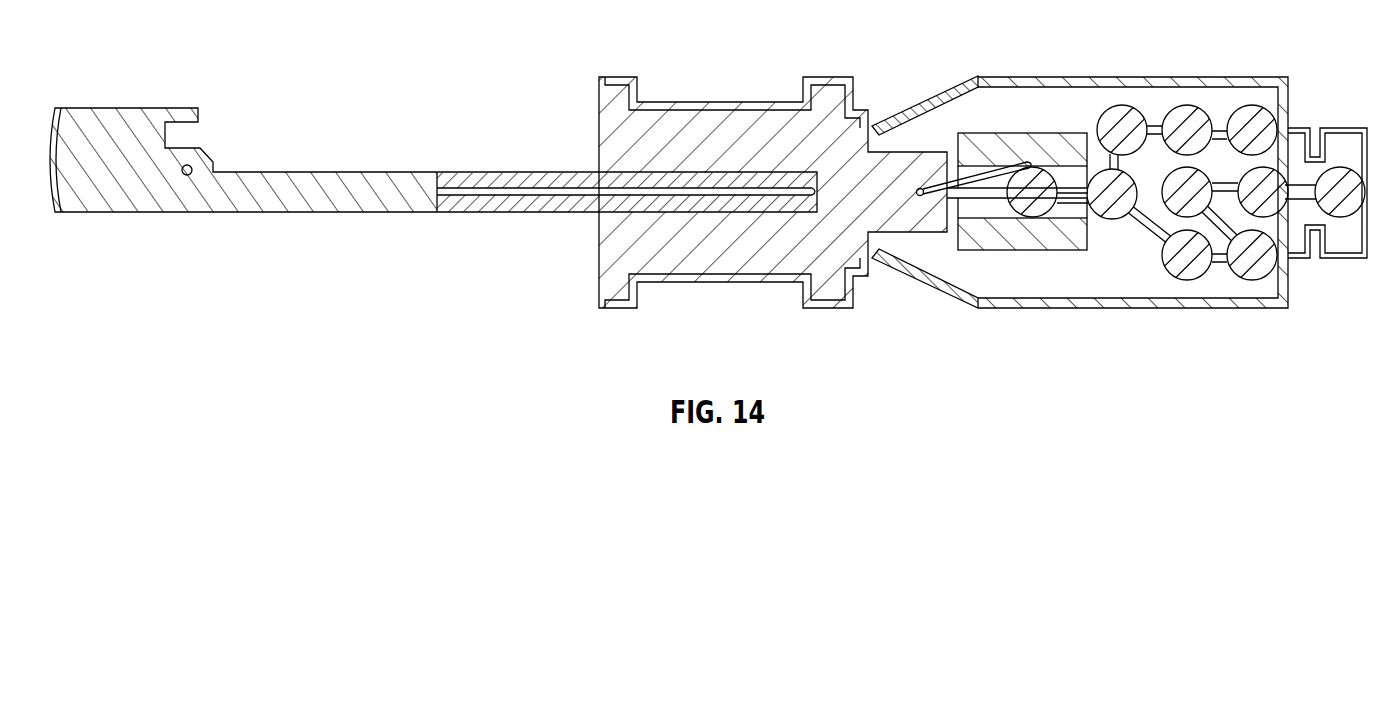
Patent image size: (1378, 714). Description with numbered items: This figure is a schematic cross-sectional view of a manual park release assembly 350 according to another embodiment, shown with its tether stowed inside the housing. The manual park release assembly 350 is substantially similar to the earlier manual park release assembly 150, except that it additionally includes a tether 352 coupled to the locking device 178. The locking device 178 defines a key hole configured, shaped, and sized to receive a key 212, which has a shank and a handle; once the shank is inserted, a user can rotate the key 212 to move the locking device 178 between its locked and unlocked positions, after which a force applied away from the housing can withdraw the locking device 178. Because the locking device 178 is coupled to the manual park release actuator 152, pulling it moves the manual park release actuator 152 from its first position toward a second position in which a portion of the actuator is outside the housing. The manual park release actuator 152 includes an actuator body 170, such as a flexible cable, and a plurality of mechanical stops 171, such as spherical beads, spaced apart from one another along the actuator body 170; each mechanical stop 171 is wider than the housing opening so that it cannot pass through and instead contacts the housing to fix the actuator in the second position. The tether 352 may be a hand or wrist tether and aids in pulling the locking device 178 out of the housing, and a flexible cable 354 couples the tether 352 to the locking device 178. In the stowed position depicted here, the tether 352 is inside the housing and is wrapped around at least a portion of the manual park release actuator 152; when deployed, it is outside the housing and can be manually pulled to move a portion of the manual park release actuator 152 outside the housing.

The key 212 is at (323, 155).
The locking device 178 is at (712, 142).
The manual park release assembly 150 is at (983, 77).
The manual park release assembly 350 is at (1056, 72).
The tether 352 is at (992, 133).
The flexible cable 354 is at (948, 185).
The manual park release actuator 152 is at (1072, 193).
The actuator body 170 is at (1150, 120).
The mechanical stop 171 is at (1190, 125).